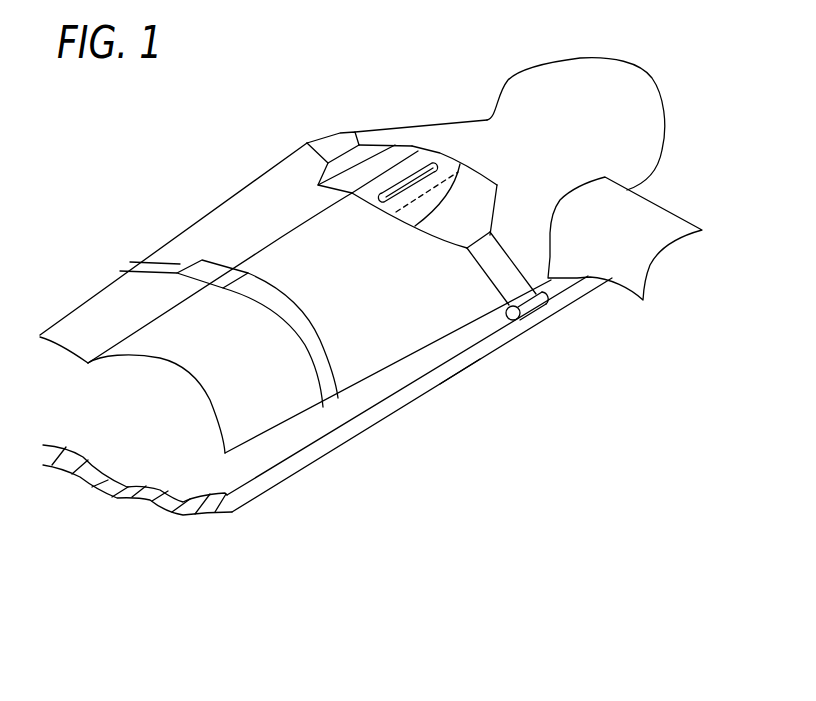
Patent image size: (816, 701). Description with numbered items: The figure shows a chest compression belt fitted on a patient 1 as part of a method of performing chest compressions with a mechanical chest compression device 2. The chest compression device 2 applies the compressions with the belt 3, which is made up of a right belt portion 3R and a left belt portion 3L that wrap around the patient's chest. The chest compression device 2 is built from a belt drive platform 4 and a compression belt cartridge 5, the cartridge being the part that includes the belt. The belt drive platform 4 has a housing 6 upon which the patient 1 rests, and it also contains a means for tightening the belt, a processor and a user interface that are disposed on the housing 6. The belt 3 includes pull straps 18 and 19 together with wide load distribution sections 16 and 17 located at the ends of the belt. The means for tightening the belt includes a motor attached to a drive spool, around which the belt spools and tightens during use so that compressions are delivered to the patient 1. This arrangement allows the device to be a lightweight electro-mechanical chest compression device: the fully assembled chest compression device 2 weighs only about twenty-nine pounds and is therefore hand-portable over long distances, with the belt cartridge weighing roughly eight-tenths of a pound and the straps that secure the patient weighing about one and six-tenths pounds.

The patient 1 is at (662, 102).
The chest compression device 2 is at (575, 338).
The belt 3 is at (381, 205).
The right belt portion 3R is at (303, 178).
The left belt portion 3L is at (457, 255).
The belt drive platform 4 is at (410, 406).
The compression belt cartridge 5 is at (426, 170).
The housing 6 is at (462, 368).
The wide load distribution section 16 is at (403, 140).
The wide load distribution section 17 is at (481, 161).
The pull strap 18 is at (351, 136).
The pull strap 19 is at (518, 248).